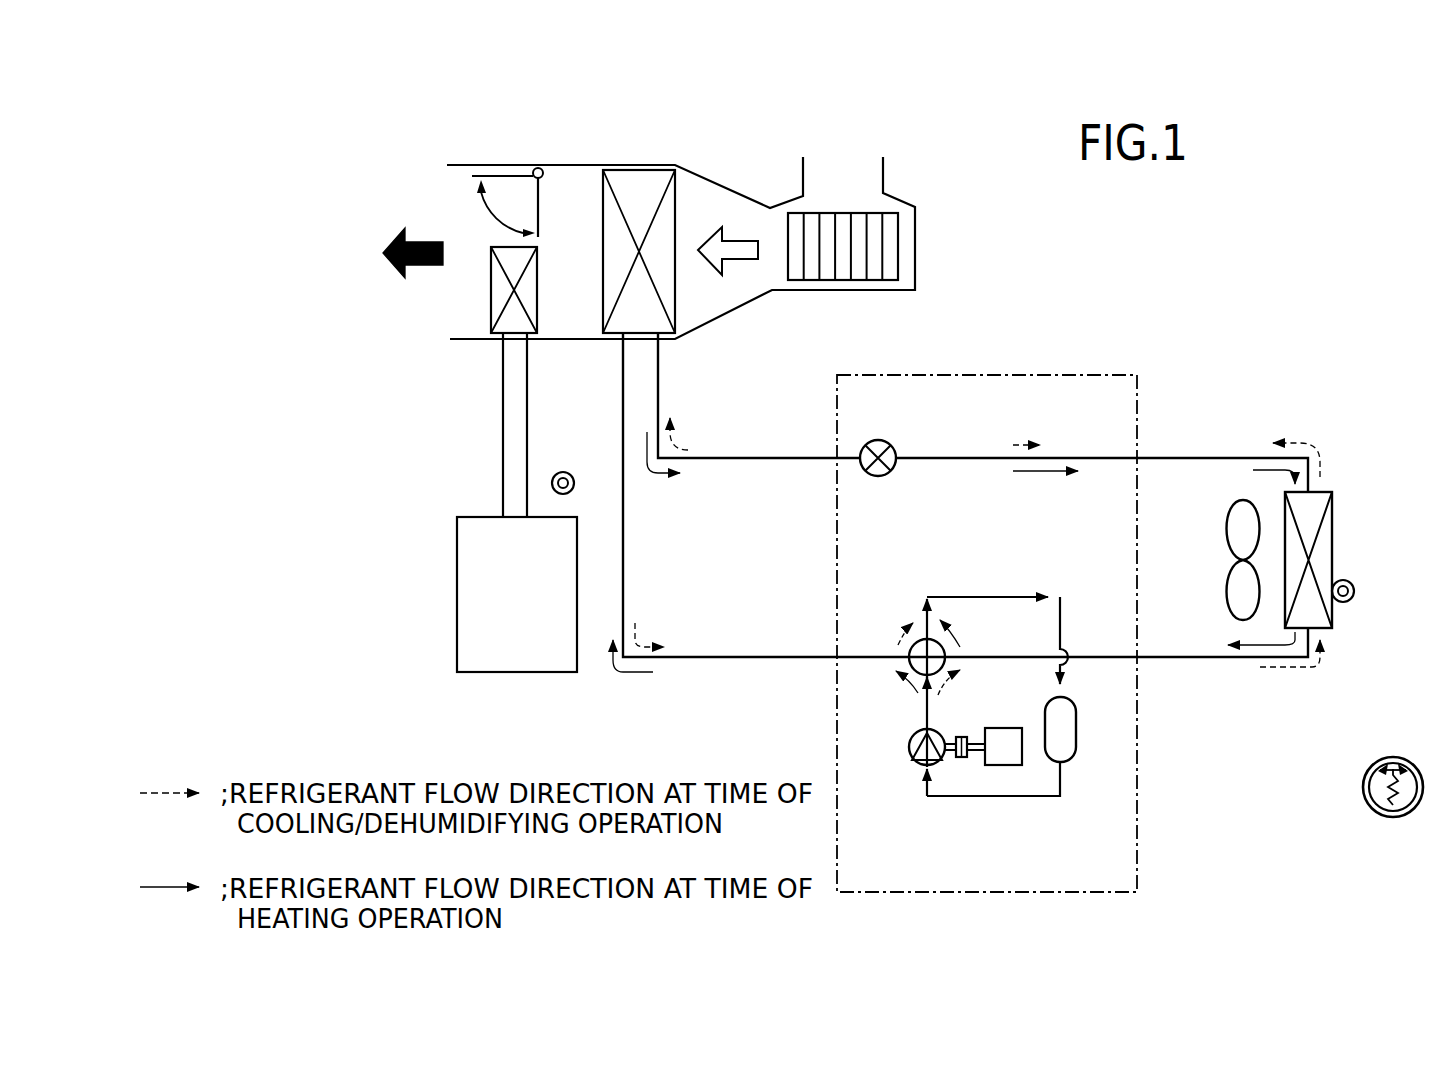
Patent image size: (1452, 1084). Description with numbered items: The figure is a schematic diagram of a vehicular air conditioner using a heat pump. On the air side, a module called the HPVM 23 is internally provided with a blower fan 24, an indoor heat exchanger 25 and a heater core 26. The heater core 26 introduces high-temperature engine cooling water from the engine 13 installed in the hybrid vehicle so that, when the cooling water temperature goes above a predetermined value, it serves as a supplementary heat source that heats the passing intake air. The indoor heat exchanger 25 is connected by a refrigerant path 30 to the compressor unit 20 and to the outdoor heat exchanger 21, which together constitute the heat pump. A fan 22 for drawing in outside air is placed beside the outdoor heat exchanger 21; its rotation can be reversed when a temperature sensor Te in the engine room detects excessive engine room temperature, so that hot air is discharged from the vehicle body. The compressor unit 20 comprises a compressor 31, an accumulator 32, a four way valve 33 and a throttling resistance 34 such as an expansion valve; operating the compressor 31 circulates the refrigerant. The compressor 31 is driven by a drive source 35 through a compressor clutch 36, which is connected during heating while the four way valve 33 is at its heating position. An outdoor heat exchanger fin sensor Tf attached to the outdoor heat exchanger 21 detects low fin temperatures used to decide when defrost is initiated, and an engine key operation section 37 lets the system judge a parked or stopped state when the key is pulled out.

The engine 13 is at (547, 672).
The compressor unit 20 is at (1137, 830).
The outdoor heat exchanger 21 is at (1332, 530).
The fan for drawing in outside air 22 is at (1227, 590).
The HPVM (Heat Pump Ventilating Module) 23 is at (567, 158).
The blower fan 24 is at (898, 243).
The indoor heat exchanger 25 is at (676, 190).
The heater core 26 is at (490, 306).
The refrigerant path 30 is at (718, 658).
The compressor 31 is at (910, 750).
The accumulator 32 is at (1076, 720).
The four way valve 33 is at (945, 645).
The throttling resistance 34 is at (895, 450).
The drive source 35 is at (1008, 728).
The compressor clutch 36 is at (958, 728).
The engine key operation section 37 is at (1408, 815).
The temperature sensor Te is at (567, 472).
The outdoor heat exchanger fin sensor Tf is at (1347, 602).